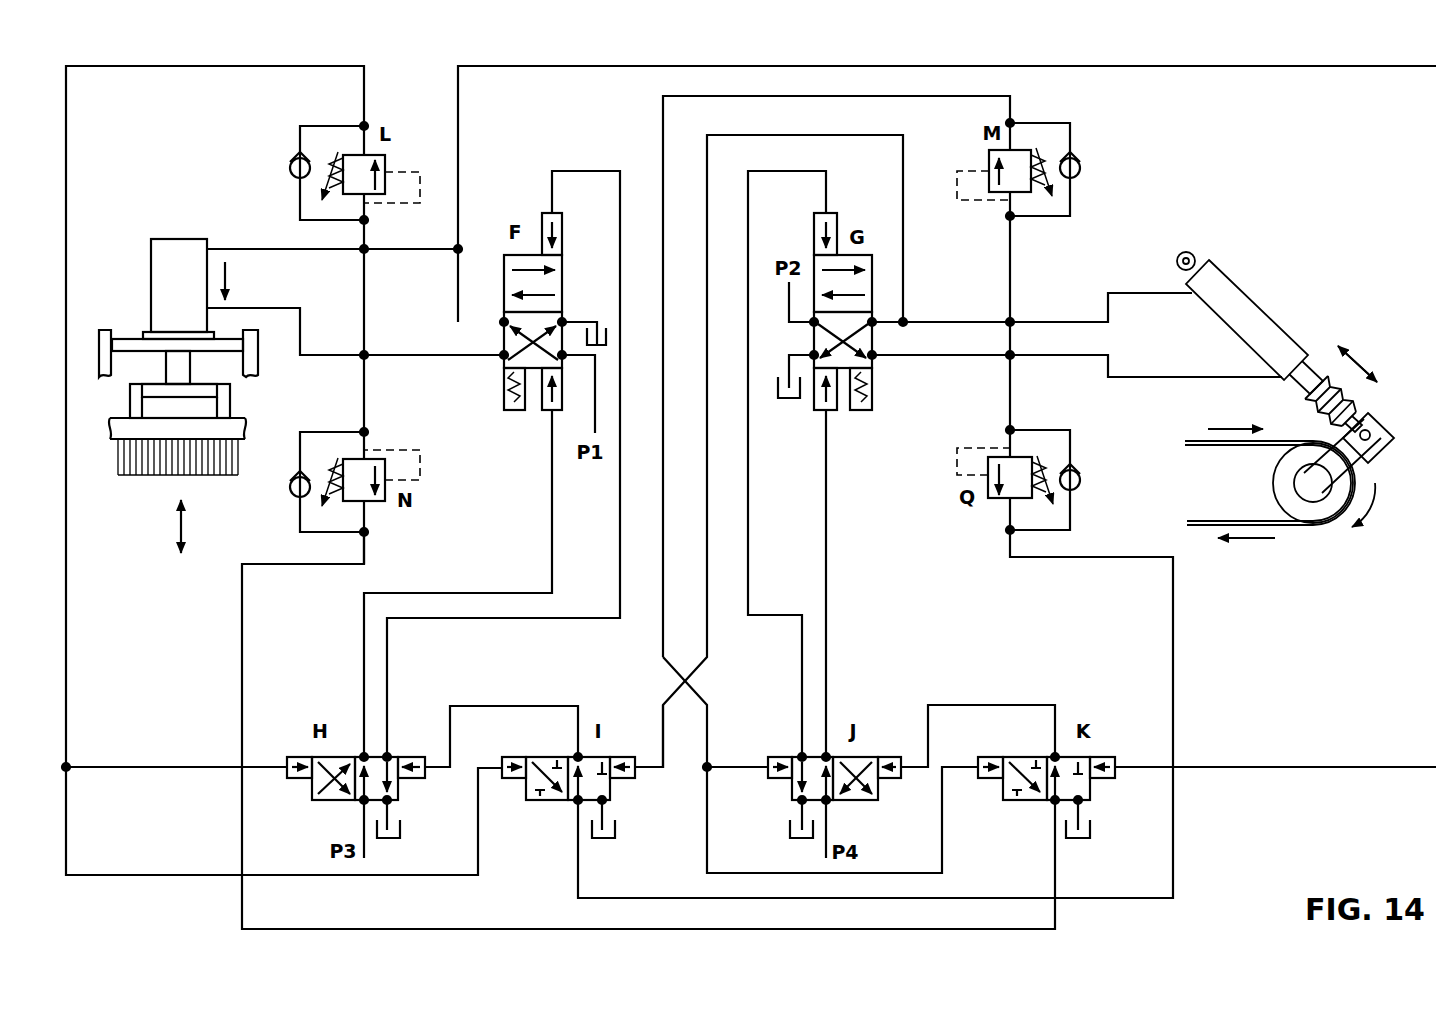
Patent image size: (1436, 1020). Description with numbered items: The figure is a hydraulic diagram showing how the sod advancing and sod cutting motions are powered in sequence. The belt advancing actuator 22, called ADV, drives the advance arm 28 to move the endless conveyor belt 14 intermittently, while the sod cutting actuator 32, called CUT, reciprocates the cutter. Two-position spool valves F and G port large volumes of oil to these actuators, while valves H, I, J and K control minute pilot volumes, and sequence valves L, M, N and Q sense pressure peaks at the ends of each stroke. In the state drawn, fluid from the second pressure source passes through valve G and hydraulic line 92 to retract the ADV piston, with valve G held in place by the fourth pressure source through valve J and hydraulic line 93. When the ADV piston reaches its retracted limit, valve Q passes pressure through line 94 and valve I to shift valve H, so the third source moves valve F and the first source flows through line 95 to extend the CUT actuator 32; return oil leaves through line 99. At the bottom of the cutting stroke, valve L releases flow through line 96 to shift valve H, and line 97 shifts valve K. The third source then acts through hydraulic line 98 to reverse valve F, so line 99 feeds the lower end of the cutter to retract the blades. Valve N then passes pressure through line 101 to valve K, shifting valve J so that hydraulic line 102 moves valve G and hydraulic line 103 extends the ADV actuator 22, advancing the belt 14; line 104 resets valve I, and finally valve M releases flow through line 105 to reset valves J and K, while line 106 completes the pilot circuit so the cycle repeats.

The endless conveyor belt 14 is at (1295, 530).
The belt advancing actuator 22 is at (1275, 310).
The advance arm 28 is at (1383, 460).
The sod cutting actuator 32 is at (150, 262).
The hydraulic line 92 is at (1118, 382).
The hydraulic line 93 is at (828, 625).
The line 94 is at (1170, 655).
The line 95 is at (455, 292).
The line 96 is at (190, 92).
The line 97 is at (460, 105).
The hydraulic line 98 is at (430, 620).
The line 99 is at (418, 358).
The line 101 is at (242, 590).
The hydraulic line 102 is at (750, 470).
The hydraulic line 103 is at (1062, 310).
The line 104 is at (905, 268).
The line 105 is at (1012, 98).
The pilot line 106 is at (362, 612).